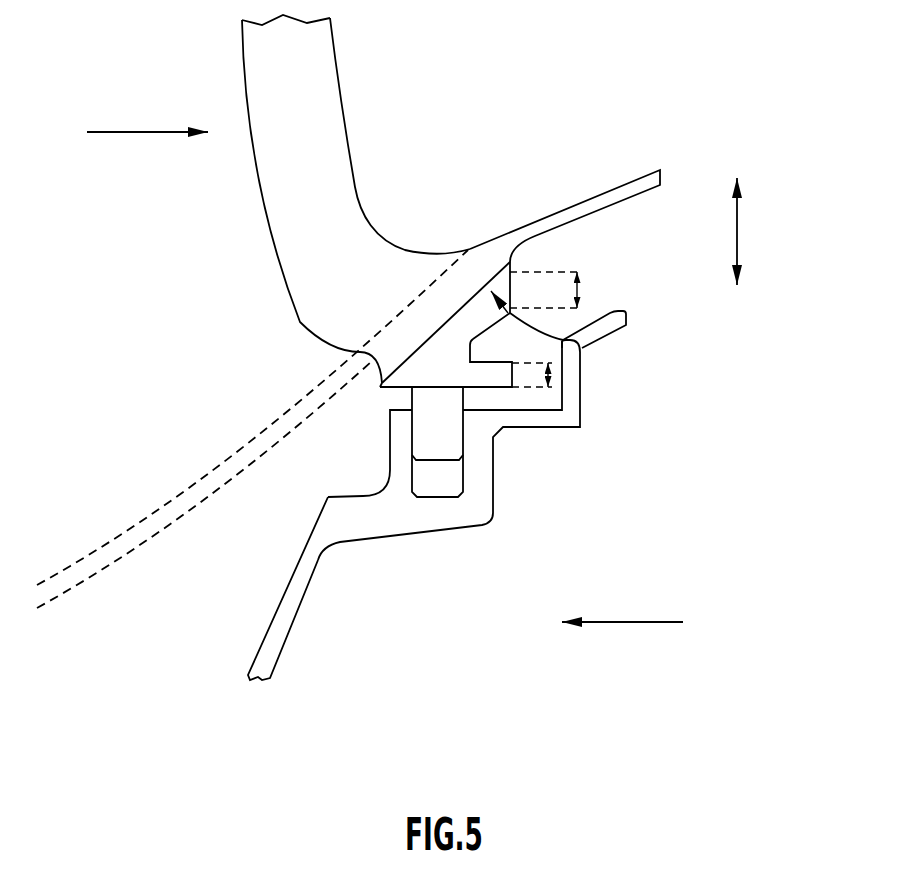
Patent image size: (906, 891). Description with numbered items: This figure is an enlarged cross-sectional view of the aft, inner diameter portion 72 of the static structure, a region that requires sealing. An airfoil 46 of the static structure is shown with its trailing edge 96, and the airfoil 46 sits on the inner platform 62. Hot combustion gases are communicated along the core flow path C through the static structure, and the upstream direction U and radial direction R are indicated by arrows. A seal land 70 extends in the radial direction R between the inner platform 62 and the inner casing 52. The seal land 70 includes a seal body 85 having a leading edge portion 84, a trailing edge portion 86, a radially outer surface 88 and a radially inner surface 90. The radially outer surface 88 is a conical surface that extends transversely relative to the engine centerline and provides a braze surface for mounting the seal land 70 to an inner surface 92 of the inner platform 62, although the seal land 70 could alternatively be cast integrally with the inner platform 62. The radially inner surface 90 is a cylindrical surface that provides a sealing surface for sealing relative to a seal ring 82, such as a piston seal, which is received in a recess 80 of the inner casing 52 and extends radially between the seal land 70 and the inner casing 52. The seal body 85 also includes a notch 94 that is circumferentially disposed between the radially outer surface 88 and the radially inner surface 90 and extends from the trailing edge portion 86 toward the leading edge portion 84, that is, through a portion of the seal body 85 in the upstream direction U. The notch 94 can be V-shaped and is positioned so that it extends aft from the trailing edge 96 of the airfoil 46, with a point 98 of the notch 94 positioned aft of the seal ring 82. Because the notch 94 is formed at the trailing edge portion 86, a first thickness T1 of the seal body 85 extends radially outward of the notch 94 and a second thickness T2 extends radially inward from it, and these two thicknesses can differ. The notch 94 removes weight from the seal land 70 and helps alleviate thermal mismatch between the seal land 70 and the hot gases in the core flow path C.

The airfoil 46 is at (273, 311).
The inner casing 52 is at (302, 573).
The inner platform 62 is at (565, 277).
The seal land 70 is at (431, 366).
The aft, inner diameter portion 72 is at (560, 115).
The recess 80 is at (473, 457).
The seal ring 82 is at (450, 449).
The leading edge portion 84 is at (383, 386).
The seal body 85 is at (447, 340).
The trailing edge portion 86 is at (510, 293).
The radially outer surface 88 is at (495, 342).
The radially inner surface 90 is at (500, 388).
The inner surface 92 is at (482, 292).
The notch 94 is at (562, 341).
The trailing edge 96 is at (355, 172).
The point 98 is at (466, 352).
The first thickness T1 is at (563, 290).
The second thickness T2 is at (552, 375).
The core flow path C is at (153, 132).
The radial direction R is at (737, 230).
The upstream direction U is at (615, 622).